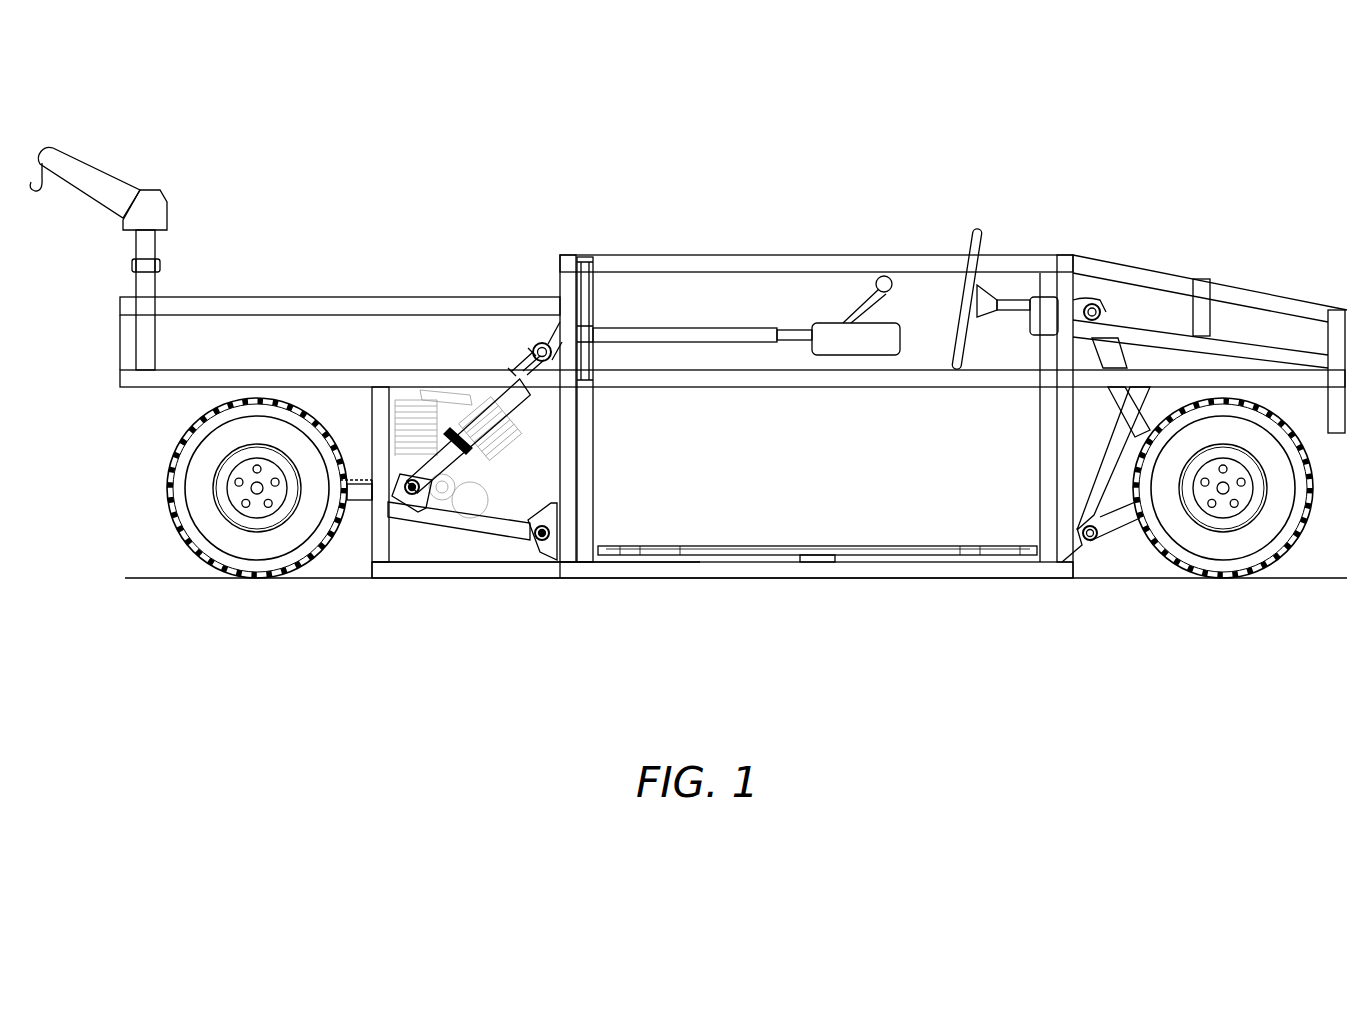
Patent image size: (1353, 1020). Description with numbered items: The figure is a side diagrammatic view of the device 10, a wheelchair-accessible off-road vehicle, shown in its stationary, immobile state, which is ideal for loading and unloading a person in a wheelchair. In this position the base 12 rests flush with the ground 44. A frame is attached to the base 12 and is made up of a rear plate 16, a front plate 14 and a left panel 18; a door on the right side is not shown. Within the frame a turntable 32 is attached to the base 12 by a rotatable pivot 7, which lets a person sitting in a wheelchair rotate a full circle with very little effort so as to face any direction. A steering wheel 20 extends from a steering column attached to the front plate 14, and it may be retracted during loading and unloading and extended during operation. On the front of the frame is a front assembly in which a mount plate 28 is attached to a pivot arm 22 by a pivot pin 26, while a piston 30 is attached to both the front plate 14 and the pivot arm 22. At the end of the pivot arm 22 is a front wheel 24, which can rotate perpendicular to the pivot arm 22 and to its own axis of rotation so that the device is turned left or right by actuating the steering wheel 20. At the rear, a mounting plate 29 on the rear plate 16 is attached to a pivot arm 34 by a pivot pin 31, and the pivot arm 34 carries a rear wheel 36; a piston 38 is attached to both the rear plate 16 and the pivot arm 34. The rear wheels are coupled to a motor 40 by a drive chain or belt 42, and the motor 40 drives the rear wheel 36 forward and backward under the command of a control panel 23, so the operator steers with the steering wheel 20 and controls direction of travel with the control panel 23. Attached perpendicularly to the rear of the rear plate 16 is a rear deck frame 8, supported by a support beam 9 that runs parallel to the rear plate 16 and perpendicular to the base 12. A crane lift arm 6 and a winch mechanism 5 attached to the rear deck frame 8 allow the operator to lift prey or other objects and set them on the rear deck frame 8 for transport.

The device 10 is at (580, 90).
The winch mechanism 5 is at (130, 264).
The crane lift arm 6 is at (85, 173).
The rotatable pivot 7 is at (812, 562).
The rear deck frame 8 is at (300, 305).
The support beam 9 is at (383, 537).
The base 12 is at (855, 572).
The front plate 14 is at (1063, 310).
The rear plate 16 is at (545, 270).
The left panel 18 is at (730, 263).
The steering wheel 20 is at (975, 243).
The pivot arm 22 is at (1133, 515).
The control panel 23 is at (838, 330).
The front wheel 24 is at (1275, 517).
The pivot pin 26 is at (1110, 517).
The mount plate 28 is at (1087, 550).
The mounting plate 29 is at (548, 560).
The piston 30 is at (1122, 343).
The pivot pin 31 is at (533, 545).
The turntable 32 is at (745, 549).
The pivot arm 34 is at (440, 517).
The rear wheel 36 is at (200, 515).
The piston 38 is at (488, 405).
The motor 40 is at (498, 458).
The drive chain or belt 42 is at (383, 537).
The ground 44 is at (1285, 577).